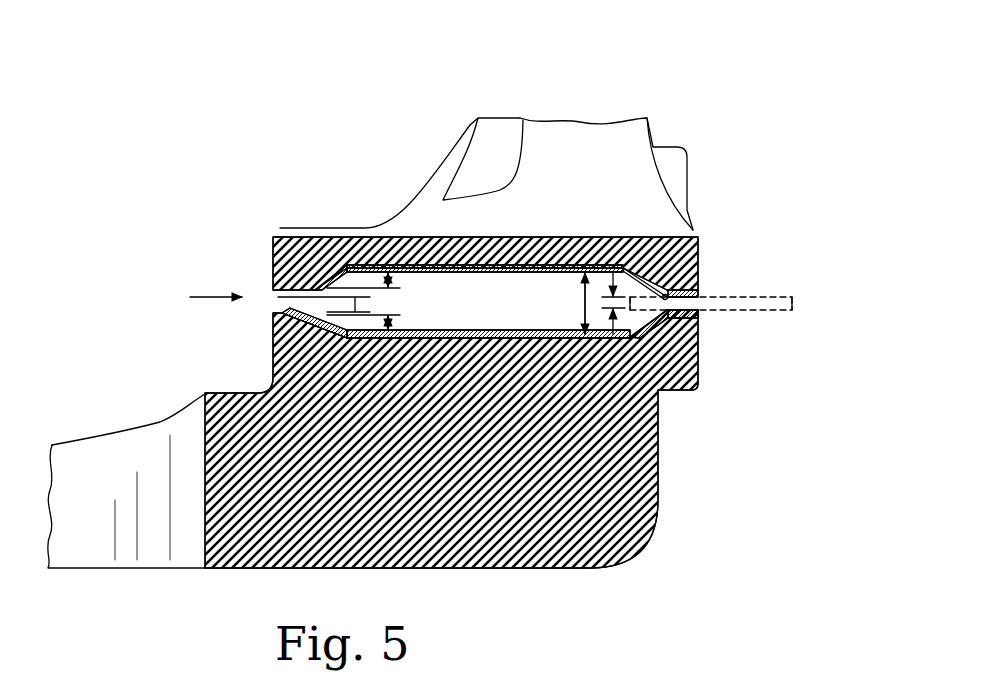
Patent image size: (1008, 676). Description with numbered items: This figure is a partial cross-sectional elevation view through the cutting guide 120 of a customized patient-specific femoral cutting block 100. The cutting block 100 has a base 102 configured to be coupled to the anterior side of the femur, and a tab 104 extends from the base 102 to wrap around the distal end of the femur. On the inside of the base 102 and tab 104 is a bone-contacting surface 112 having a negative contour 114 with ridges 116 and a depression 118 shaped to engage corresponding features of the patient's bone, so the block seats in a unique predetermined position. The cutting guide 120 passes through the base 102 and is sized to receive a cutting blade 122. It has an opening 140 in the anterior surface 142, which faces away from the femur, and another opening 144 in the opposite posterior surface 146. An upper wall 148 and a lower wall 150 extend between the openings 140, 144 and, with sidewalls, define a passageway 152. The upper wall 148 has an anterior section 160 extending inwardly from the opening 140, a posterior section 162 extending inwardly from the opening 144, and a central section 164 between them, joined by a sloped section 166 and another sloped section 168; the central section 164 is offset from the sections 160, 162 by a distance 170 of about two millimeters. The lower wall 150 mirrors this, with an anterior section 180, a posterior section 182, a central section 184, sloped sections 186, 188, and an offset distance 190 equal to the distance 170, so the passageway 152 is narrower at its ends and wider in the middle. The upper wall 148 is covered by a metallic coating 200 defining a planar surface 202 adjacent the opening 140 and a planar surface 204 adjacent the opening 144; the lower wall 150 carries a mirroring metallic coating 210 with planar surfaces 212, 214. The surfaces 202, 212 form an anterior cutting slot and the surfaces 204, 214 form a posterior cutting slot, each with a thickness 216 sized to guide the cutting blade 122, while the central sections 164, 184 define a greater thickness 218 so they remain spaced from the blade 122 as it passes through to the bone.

The femoral cutting block 100 is at (248, 103).
The base 102 is at (660, 461).
The tab 104 is at (74, 440).
The bone-contacting surface 112 is at (160, 422).
The negative contour 114 is at (455, 132).
The ridges 116 is at (516, 118).
The depression 118 is at (503, 150).
The cutting guide 120 is at (738, 258).
The cutting blade 122 is at (772, 296).
The opening 140 is at (700, 326).
The anterior surface 142 is at (698, 356).
The opening 144 is at (272, 288).
The posterior surface 146 is at (267, 380).
The upper wall 148 is at (356, 272).
The lower wall 150 is at (496, 340).
The passageway 152 is at (195, 298).
The anterior section 160 is at (698, 258).
The posterior section 162 is at (283, 288).
The central section 164 is at (498, 266).
The sloped section 166 is at (598, 268).
The sloped section 168 is at (308, 282).
The distance 170 is at (420, 268).
The anterior section 180 is at (680, 306).
The posterior section 182 is at (272, 320).
The central section 184 is at (558, 330).
The sloped section 186 is at (672, 345).
The sloped section 188 is at (328, 342).
The distance 190 is at (412, 336).
The metallic coating 200 is at (524, 270).
The planar surface 202 is at (641, 272).
The planar surface 204 is at (272, 292).
The metallic coating 210 is at (470, 331).
The planar surface 212 is at (672, 370).
The planar surface 214 is at (272, 314).
The thickness 216 is at (370, 297).
The thickness 218 is at (580, 306).